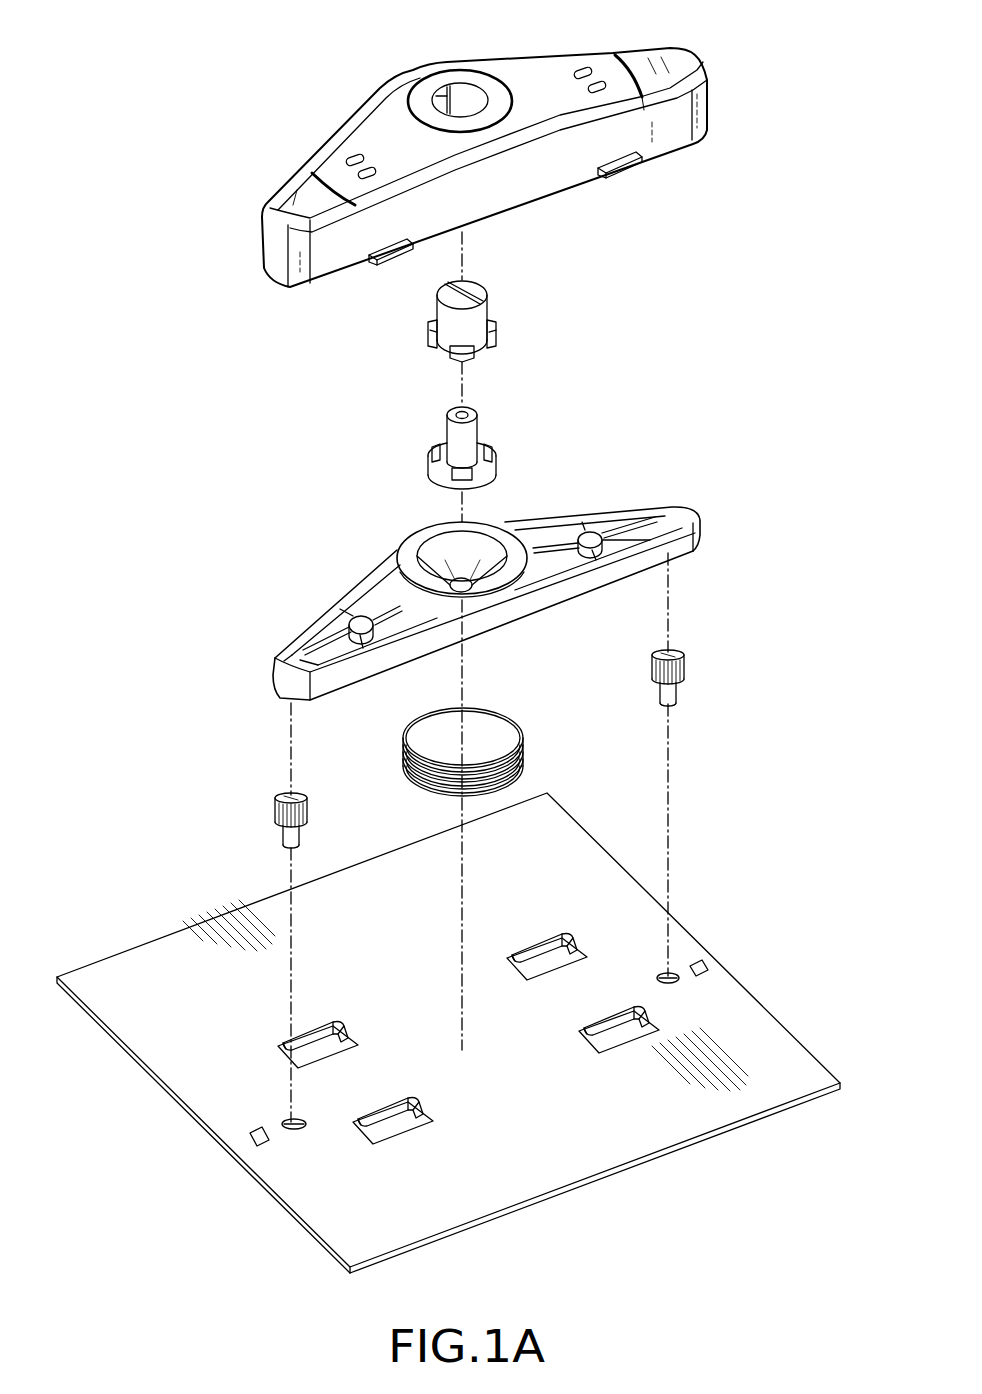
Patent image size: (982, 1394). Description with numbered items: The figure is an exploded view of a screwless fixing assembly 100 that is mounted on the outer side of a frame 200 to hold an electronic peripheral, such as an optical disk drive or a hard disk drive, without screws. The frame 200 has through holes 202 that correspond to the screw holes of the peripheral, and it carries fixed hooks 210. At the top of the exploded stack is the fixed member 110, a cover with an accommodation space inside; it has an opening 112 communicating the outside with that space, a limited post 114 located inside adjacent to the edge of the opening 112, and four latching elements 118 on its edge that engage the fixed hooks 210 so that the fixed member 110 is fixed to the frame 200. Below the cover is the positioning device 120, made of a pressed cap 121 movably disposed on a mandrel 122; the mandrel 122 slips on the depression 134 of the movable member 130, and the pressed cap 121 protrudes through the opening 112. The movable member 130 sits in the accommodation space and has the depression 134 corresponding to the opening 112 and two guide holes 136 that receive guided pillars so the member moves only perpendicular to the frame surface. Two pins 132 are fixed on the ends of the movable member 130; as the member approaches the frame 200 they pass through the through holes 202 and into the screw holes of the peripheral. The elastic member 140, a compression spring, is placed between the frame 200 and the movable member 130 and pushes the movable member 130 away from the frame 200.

The screwless fixing assembly 100 is at (198, 128).
The fixed member 110 is at (708, 97).
The opening 112 is at (477, 102).
The limited post 114 is at (467, 99).
The latching elements 118 is at (627, 170).
The positioning device 120 is at (597, 287).
The pressed cap 121 is at (482, 313).
The mandrel 122 is at (472, 430).
The movable member 130 is at (531, 558).
The pins 132 is at (282, 795).
The depression 134 is at (432, 573).
The guide holes 136 is at (590, 530).
The elastic member 140 is at (518, 720).
The frame 200 is at (144, 969).
The through holes 202 is at (289, 1119).
The fixed hooks 210 is at (548, 950).